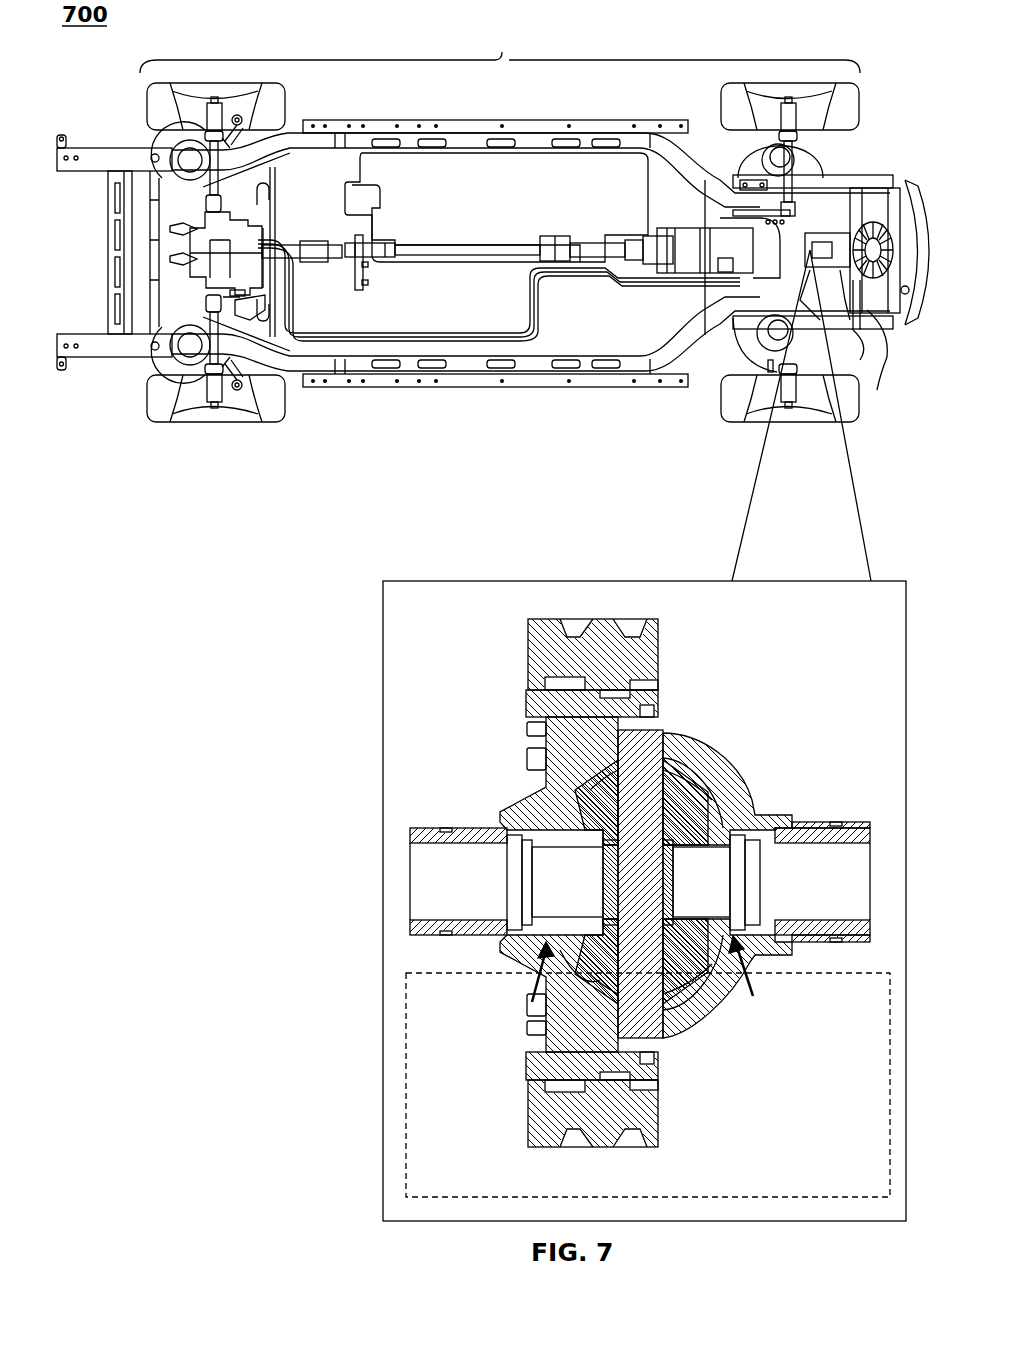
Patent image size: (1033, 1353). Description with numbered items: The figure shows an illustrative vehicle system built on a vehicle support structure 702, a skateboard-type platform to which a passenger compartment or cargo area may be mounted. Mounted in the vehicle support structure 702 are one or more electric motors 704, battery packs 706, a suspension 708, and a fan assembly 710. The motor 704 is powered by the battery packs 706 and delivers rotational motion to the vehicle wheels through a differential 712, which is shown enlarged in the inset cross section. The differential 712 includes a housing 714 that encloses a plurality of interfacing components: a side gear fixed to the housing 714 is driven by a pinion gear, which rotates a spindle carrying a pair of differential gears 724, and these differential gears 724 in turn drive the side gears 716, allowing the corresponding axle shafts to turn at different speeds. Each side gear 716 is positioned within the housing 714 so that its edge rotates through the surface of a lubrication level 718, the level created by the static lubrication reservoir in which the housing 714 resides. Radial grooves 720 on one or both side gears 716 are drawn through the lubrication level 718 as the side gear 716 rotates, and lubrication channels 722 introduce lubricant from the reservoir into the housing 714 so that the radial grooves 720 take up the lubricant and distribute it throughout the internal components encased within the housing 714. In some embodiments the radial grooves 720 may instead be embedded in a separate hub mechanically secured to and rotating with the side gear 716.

The vehicle support structure 702 is at (502, 52).
The electric motor 704 is at (175, 243).
The battery pack 706 is at (535, 235).
The suspension 708 is at (189, 158).
The fan assembly 710 is at (905, 325).
The differential 712 is at (876, 160).
The housing 714 is at (717, 767).
The side gear 716 is at (573, 828).
The lubrication level 718 is at (458, 973).
The radial grooves 720 is at (567, 828).
The lubrication channels 722 is at (526, 990).
The differential gears 724 is at (600, 980).